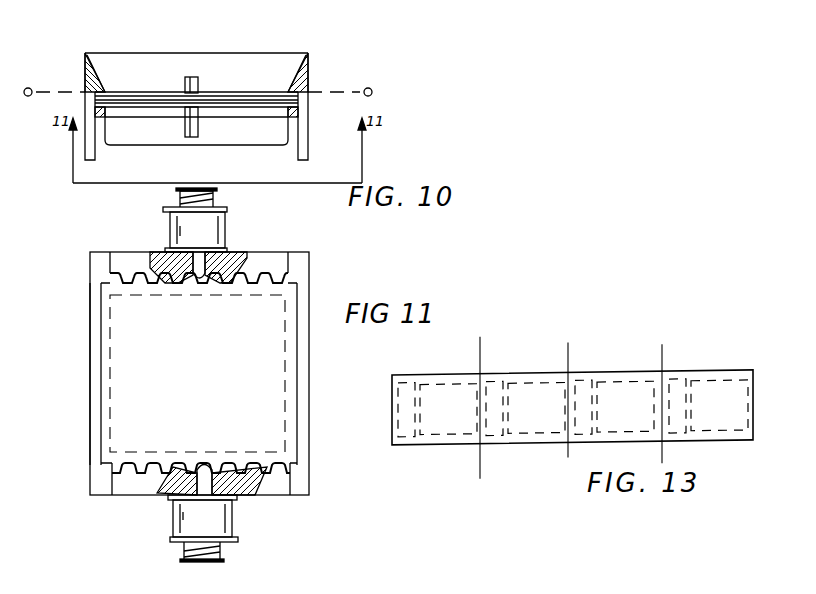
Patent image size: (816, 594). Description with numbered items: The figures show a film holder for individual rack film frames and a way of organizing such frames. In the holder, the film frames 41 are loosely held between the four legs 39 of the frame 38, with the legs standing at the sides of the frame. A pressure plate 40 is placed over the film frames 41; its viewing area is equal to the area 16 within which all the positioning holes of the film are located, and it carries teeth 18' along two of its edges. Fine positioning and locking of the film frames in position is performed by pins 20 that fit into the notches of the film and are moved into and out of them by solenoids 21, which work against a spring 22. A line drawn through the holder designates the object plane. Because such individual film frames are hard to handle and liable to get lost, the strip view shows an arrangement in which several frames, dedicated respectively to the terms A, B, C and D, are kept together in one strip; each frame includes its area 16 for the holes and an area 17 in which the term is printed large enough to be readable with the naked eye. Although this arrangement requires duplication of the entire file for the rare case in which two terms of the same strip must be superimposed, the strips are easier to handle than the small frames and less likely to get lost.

In FIG. 11, the area 16 is at (287, 347).
In FIG. 13, the area 16 is at (633, 382).
In FIG. 13, the area showing the term 17 is at (587, 383).
In FIG. 11, the teeth 18' is at (200, 373).
In FIG. 10, the pins 20 is at (198, 82).
In FIG. 11, the pins 20 is at (197, 262).
In FIG. 11, the solenoids 21 is at (210, 227).
In FIG. 11, the spring 22 is at (215, 195).
In FIG. 10, the frame 38 is at (309, 82).
In FIG. 11, the frame 38 is at (282, 497).
In FIG. 10, the legs 39 is at (300, 137).
In FIG. 11, the legs 39 is at (95, 268).
In FIG. 10, the pressure plate 40 is at (160, 119).
In FIG. 11, the pressure plate 40 is at (101, 326).
In FIG. 10, the film frames 41 is at (253, 103).